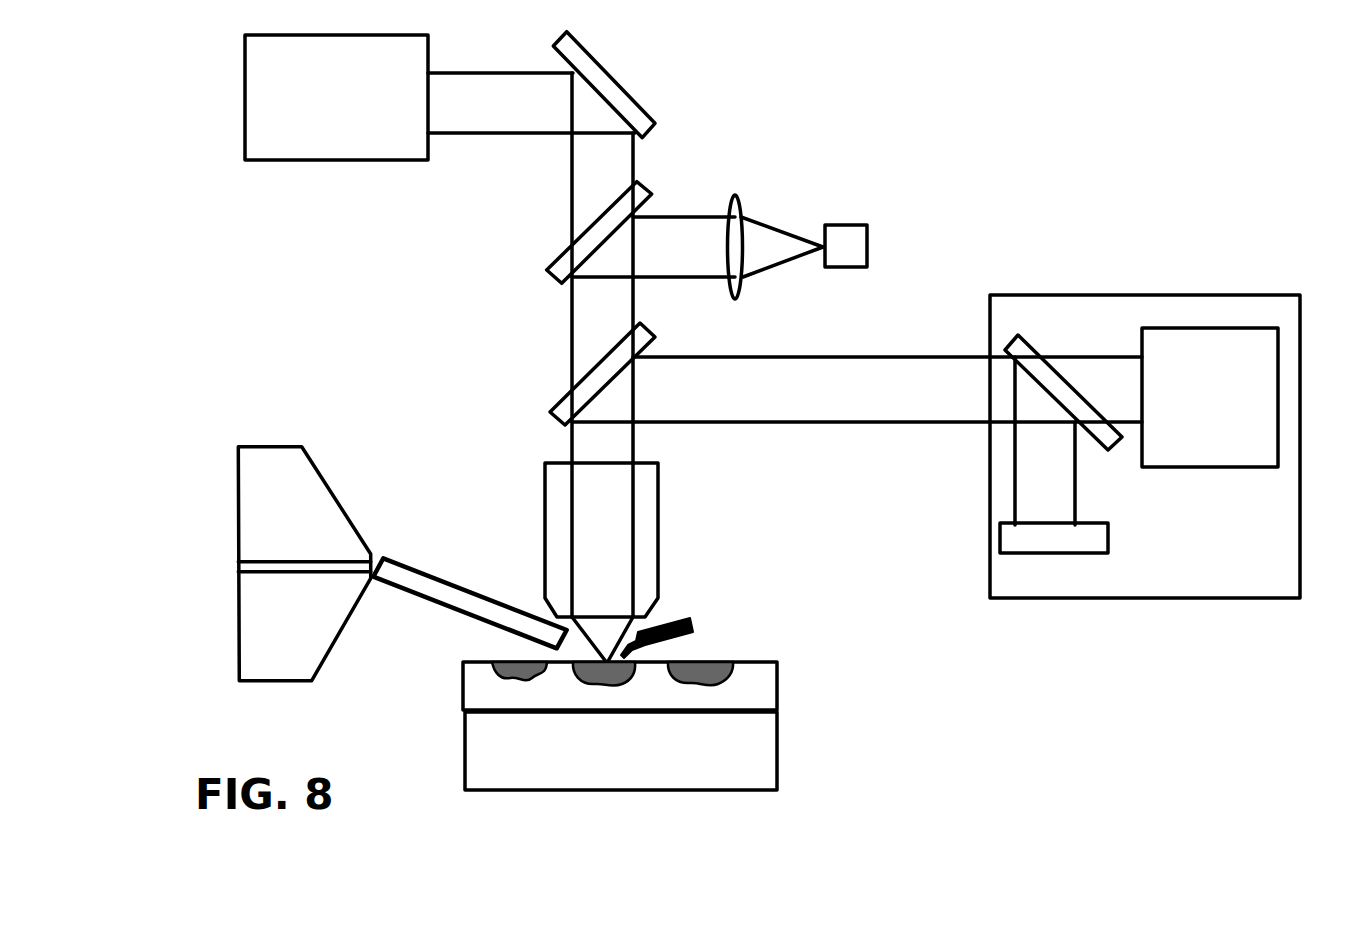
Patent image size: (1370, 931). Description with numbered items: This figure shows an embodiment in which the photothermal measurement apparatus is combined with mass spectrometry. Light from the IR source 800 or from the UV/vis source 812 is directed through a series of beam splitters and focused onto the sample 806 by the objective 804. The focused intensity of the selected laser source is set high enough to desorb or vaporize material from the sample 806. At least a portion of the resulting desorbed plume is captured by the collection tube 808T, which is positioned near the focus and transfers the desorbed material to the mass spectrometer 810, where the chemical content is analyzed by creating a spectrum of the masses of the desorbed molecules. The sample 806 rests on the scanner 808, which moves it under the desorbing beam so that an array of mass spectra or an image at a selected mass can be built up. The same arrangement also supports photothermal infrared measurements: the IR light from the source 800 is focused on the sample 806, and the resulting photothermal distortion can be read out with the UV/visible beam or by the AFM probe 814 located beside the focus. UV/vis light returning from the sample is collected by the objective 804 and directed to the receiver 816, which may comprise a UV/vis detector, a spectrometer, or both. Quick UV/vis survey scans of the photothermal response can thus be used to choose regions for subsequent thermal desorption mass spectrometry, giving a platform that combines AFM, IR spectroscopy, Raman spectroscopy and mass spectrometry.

The IR source 800 is at (336, 97).
The objective 804 is at (574, 540).
The sample 806 is at (592, 686).
The scanner 808 is at (621, 751).
The collection tube 808T is at (469, 599).
The mass spectrometer 810 is at (304, 564).
The UV/vis source 812 is at (799, 247).
The AFM probe 814 is at (684, 629).
The receiver 816 is at (1145, 425).